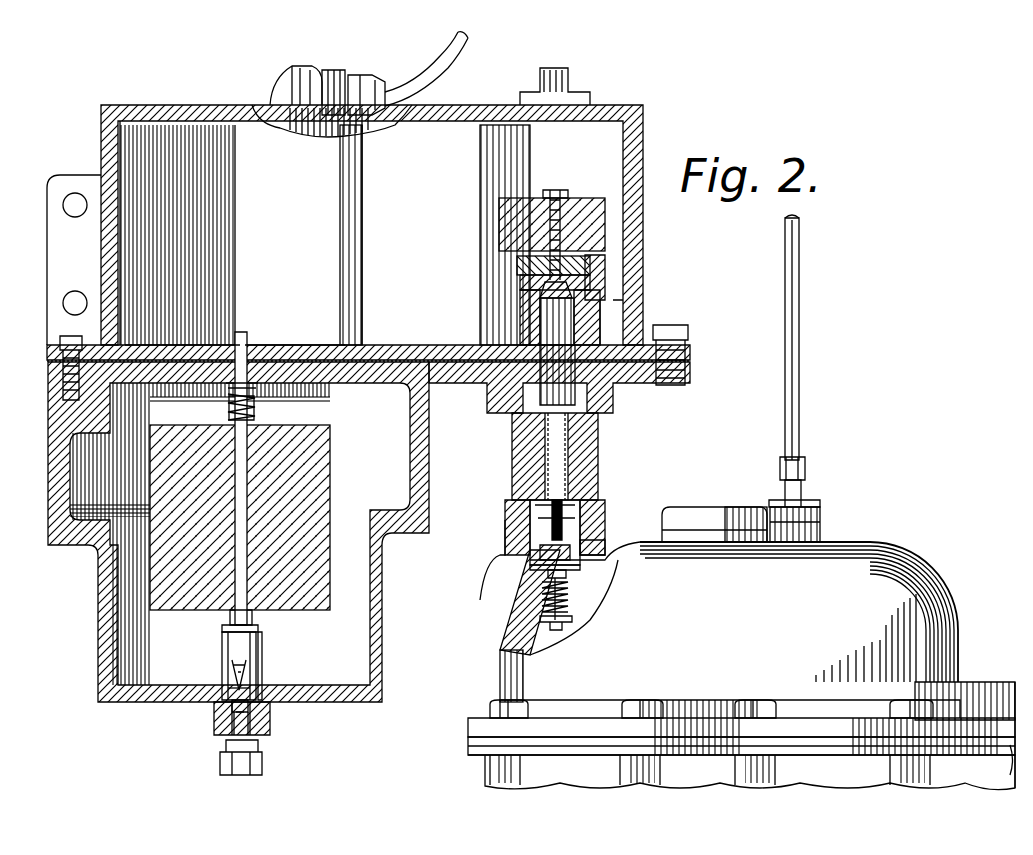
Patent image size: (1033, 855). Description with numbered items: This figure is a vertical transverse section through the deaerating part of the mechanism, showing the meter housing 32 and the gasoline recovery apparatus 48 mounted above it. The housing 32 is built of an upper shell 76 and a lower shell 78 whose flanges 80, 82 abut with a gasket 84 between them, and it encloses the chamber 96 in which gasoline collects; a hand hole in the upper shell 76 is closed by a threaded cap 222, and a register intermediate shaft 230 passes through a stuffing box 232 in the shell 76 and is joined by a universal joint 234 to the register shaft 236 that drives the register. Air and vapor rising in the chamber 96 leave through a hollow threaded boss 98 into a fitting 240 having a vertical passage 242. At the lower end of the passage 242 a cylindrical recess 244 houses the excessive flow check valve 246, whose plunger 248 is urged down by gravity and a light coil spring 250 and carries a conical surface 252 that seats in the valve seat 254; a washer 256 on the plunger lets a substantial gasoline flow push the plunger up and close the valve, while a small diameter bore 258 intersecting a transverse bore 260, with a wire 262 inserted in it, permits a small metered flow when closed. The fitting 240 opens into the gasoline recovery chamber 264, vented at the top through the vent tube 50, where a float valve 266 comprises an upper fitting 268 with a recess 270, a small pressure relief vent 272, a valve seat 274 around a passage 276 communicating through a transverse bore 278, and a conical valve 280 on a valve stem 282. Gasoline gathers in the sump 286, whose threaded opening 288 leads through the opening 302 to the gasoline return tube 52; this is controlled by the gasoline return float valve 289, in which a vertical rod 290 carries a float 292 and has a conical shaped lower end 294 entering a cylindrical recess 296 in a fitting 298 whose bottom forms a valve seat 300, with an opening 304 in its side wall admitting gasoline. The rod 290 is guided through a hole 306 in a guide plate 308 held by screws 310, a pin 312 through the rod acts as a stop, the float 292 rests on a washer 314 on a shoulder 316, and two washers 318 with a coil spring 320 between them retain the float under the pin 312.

The gasoline recovery apparatus 48 is at (100, 144).
The vent tube 50 is at (452, 66).
The gasoline recovery chamber 264 is at (428, 224).
The float valve 266 is at (612, 220).
The conical valve 280 is at (560, 196).
The valve stem 282 is at (518, 262).
The transverse bore 278 is at (521, 280).
The passage 276 is at (541, 292).
The pressure relief vent 272 is at (540, 310).
The valve seat 274 is at (588, 300).
The recess 270 is at (600, 310).
The upper fitting 268 is at (590, 335).
The screws 310 is at (140, 345).
The guide plate 308 is at (168, 345).
The hole 306 is at (305, 356).
The pin 312 is at (258, 390).
The washers 318 is at (226, 403).
The coil spring 320 is at (258, 409).
The float 292 is at (215, 532).
The vertical rod 290 is at (150, 595).
The shoulder 316 is at (250, 600).
The washer 314 is at (260, 626).
The sump 286 is at (314, 535).
The gasoline return float valve 289 is at (214, 643).
The cylindrical recess 296 is at (234, 660).
The opening 304 is at (262, 672).
The fitting 298 is at (226, 690).
The valve seat 300 is at (232, 704).
The conical shaped lower end 294 is at (228, 716).
The threaded opening 288 is at (234, 730).
The opening 302 is at (270, 716).
The gasoline return tube 52 is at (262, 776).
The fitting 240 is at (598, 446).
The passage 242 is at (566, 470).
The conical surface 252 is at (562, 505).
The wire 262 is at (582, 520).
The valve seat 254 is at (512, 477).
The cylindrical recess 244 is at (582, 535).
The hollow threaded boss 98 is at (585, 550).
The excessive flow check valve 246 is at (536, 512).
The washer 256 is at (540, 530).
The small diameter bore 258 is at (545, 556).
The plunger 248 is at (550, 570).
The transverse bore 260 is at (567, 575).
The coil spring 250 is at (568, 600).
The chamber 96 is at (528, 640).
The flange 80 is at (468, 722).
The gasket 84 is at (468, 738).
The flange 82 is at (468, 762).
The threaded cap 222 is at (700, 527).
The register shaft 236 is at (800, 408).
The universal joint 234 is at (808, 468).
The register intermediate shaft 230 is at (822, 498).
The stuffing box 232 is at (832, 544).
The housing 32 is at (920, 577).
The upper shell 76 is at (948, 642).
The lower shell 78 is at (978, 776).